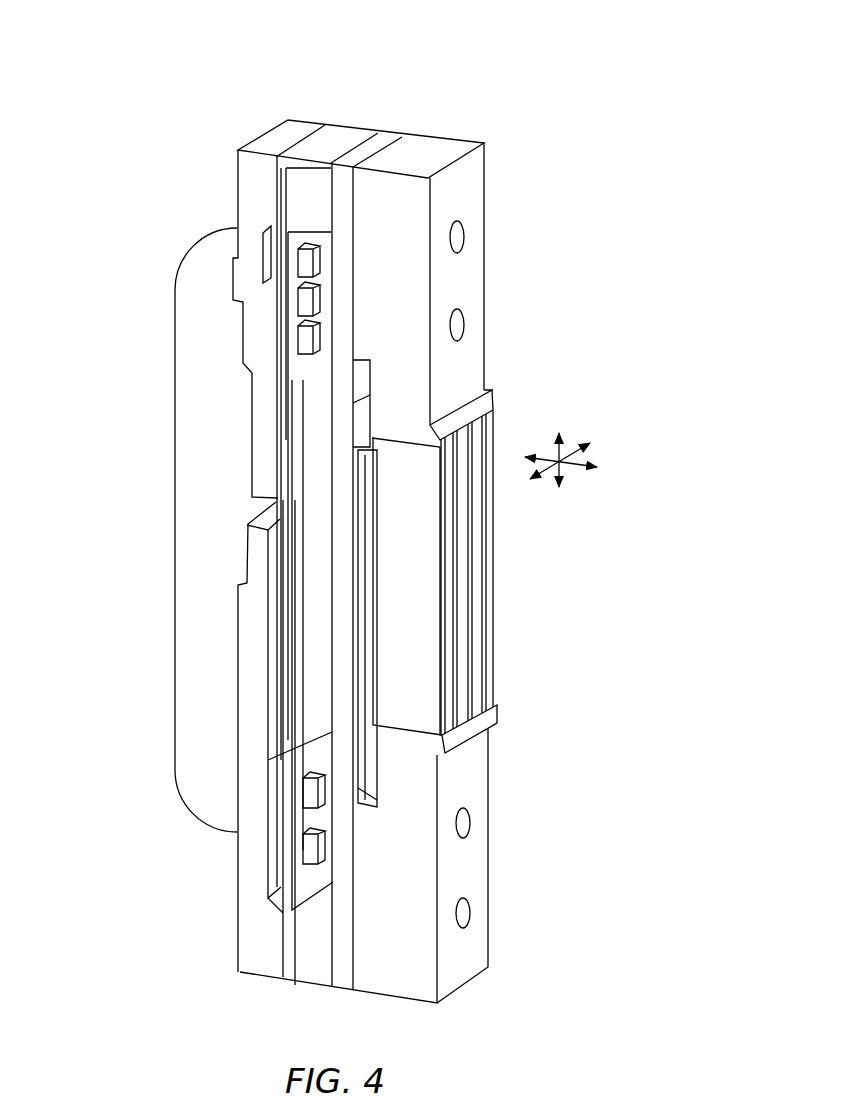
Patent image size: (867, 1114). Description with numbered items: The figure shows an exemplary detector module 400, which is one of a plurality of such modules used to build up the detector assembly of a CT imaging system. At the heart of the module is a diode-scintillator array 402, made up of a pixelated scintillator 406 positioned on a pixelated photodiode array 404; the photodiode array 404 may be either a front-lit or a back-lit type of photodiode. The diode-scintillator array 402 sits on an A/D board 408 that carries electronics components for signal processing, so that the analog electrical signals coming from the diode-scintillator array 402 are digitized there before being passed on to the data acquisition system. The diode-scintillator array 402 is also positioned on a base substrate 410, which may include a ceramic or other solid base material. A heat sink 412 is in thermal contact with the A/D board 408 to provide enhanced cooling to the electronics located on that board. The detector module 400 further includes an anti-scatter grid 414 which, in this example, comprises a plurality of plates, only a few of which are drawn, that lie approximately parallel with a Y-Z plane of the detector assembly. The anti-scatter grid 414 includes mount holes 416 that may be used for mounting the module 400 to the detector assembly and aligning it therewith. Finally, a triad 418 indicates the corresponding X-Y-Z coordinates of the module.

The detector module 400 is at (505, 74).
The diode-scintillator array 402 is at (324, 454).
The pixelated photodiode array 404 is at (360, 607).
The pixelated scintillator 406 is at (373, 713).
The A/D board 408 is at (265, 728).
The base substrate 410 is at (343, 190).
The heat sink 412 is at (199, 432).
The anti-scatter grid 414 is at (521, 586).
The mount holes 416 is at (470, 823).
The triad 418 is at (569, 397).